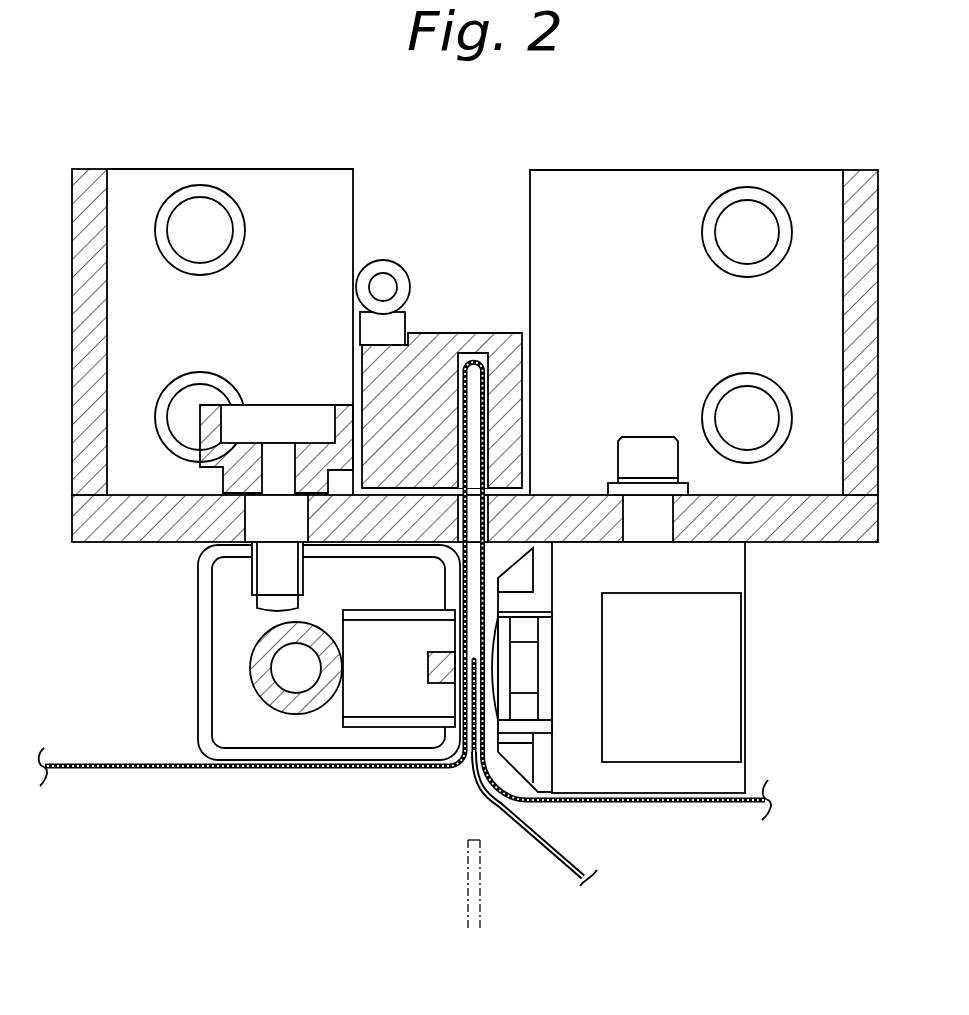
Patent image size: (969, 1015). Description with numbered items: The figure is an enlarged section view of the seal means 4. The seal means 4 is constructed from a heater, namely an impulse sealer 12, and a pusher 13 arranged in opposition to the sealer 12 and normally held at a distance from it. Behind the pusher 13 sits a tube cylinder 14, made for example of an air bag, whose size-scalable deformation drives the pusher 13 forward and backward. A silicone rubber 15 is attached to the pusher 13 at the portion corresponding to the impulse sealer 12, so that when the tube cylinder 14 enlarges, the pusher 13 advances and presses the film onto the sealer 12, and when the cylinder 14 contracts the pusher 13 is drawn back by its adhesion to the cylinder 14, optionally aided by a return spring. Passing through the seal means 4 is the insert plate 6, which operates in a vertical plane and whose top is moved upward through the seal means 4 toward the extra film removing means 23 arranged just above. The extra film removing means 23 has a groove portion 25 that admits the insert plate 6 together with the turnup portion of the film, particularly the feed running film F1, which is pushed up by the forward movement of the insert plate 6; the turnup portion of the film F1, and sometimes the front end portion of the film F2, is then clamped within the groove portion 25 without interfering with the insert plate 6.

The seal means 4 is at (567, 662).
The insert plate 6 is at (473, 487).
The impulse sealer 12 is at (488, 667).
The pusher 13 is at (417, 712).
The tube cylinder 14 is at (293, 712).
The silicone rubber 15 is at (443, 652).
The extra film removing means 23 is at (433, 318).
The groove portion 25 is at (482, 353).
The feed running film F1 is at (650, 802).
The film F2 is at (522, 830).